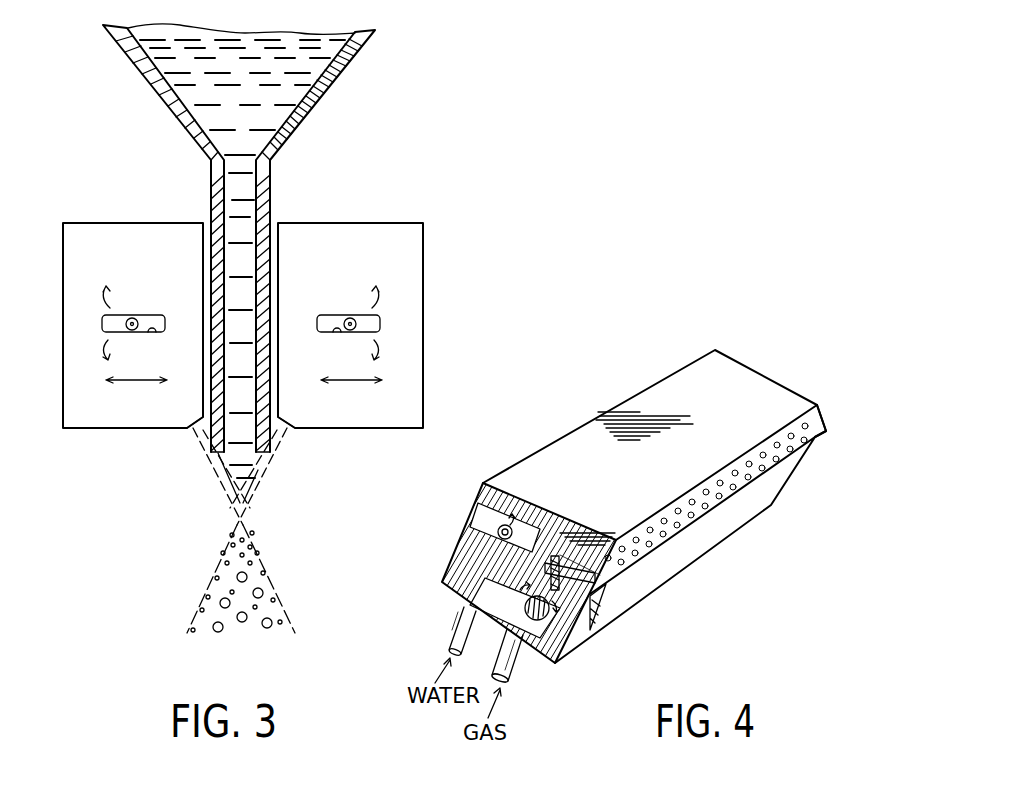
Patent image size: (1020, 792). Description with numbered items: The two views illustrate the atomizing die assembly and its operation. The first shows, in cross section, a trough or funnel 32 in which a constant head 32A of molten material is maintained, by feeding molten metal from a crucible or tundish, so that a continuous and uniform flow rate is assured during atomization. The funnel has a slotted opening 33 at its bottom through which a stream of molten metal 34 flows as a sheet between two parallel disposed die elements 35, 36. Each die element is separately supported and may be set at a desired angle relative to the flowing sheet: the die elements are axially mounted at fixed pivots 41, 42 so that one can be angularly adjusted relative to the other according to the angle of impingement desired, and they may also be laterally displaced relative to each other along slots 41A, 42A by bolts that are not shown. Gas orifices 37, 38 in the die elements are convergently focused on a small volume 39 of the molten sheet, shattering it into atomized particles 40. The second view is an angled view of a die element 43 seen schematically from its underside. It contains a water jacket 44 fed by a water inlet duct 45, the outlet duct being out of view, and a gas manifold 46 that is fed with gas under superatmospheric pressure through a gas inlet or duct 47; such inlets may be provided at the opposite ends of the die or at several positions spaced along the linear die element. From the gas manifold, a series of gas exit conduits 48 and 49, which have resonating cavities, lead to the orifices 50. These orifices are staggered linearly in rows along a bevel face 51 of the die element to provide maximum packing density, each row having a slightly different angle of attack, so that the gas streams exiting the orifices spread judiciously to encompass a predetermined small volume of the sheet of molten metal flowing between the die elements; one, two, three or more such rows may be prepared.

In FIG. 3, the funnel 32 is at (324, 101).
In FIG. 3, the constant head 32A is at (324, 38).
In FIG. 3, the slotted opening 33 is at (243, 201).
In FIG. 3, the stream of molten metal 34 is at (247, 231).
In FIG. 3, the die element 35 is at (62, 393).
In FIG. 3, the die element 36 is at (424, 388).
In FIG. 3, the orifice 37 is at (193, 429).
In FIG. 3, the orifice 38 is at (287, 429).
In FIG. 3, the small volume 39 is at (218, 497).
In FIG. 3, the atomized particles 40 is at (230, 570).
In FIG. 3, the fixed pivot 41 is at (133, 318).
In FIG. 3, the slot 41A is at (153, 334).
In FIG. 3, the fixed pivot 42 is at (351, 318).
In FIG. 3, the slot 42A is at (336, 334).
In FIG. 4, the die element 43 is at (688, 378).
In FIG. 4, the water jacket 44 is at (478, 512).
In FIG. 4, the water inlet duct 45 is at (462, 622).
In FIG. 4, the gas manifold 46 is at (562, 640).
In FIG. 4, the gas inlet duct 47 is at (518, 675).
In FIG. 4, the gas exit conduit 48 is at (590, 617).
In FIG. 4, the gas exit conduit 49 is at (565, 566).
In FIG. 4, the orifices 50 is at (624, 564).
In FIG. 4, the bevel face 51 is at (817, 436).